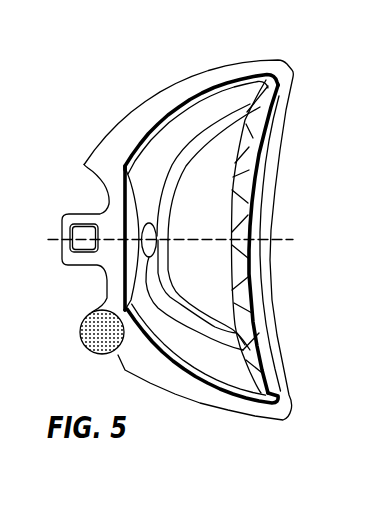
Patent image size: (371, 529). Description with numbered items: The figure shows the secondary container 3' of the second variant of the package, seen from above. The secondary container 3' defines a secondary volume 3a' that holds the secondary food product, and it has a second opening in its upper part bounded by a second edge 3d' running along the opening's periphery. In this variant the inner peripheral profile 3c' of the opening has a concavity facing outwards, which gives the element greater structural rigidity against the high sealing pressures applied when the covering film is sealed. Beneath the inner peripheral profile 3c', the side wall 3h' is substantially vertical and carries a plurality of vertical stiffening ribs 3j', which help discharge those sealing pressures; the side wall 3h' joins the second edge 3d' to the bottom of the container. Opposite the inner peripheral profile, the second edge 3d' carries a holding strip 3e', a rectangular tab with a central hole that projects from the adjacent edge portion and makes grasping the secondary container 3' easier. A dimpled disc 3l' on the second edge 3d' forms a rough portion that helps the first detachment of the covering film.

The secondary container 3' is at (177, 228).
The side wall 3h' is at (201, 165).
The holding strip 3e' is at (65, 184).
The secondary volume 3a' is at (227, 227).
The stiffening ribs 3j' is at (277, 236).
The inner peripheral profile 3c' is at (289, 239).
The fastening boss 3l' is at (80, 320).
The second edge 3d' is at (201, 375).